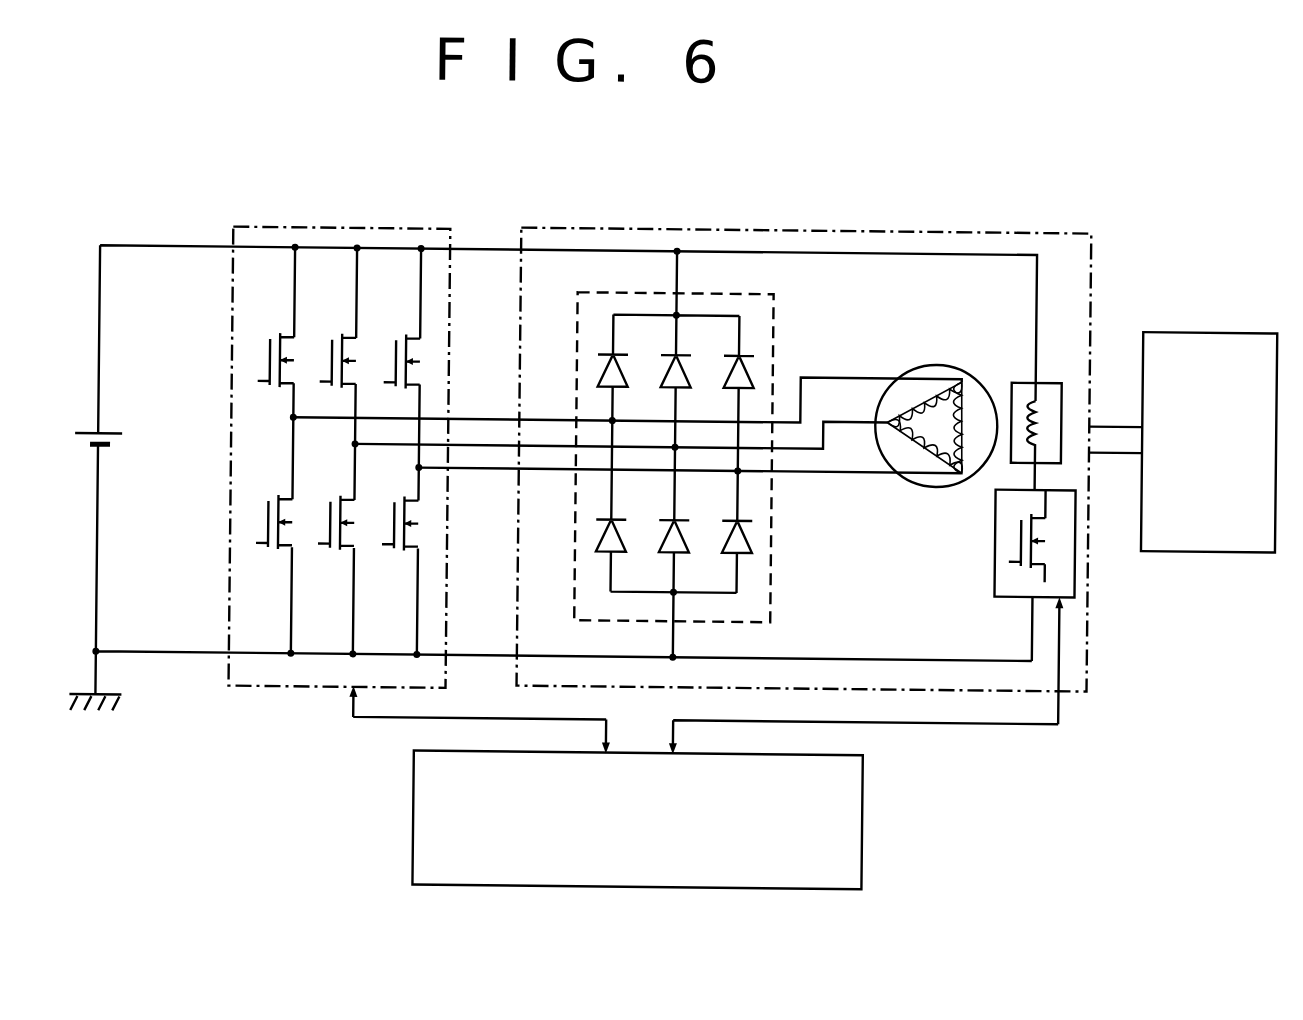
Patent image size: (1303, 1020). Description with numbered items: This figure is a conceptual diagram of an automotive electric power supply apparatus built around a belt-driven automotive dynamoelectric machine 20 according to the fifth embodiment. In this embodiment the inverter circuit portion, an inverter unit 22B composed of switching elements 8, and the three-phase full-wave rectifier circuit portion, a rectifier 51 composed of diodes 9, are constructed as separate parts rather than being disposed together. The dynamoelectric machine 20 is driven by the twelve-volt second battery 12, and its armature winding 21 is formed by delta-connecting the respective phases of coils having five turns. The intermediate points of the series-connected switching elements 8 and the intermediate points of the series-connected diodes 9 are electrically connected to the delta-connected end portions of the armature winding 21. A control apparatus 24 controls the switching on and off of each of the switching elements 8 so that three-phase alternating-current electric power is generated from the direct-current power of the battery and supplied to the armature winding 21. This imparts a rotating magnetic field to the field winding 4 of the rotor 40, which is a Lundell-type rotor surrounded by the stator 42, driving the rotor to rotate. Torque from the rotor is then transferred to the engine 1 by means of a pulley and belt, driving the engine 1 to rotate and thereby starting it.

The engine 1 is at (1210, 327).
The field winding 4 is at (1047, 411).
The switching elements 8 is at (259, 350).
The diodes 9 is at (775, 344).
The second battery 12 is at (114, 437).
The dynamoelectric machine 20 is at (888, 200).
The armature winding 21 is at (971, 392).
The inverter unit 22B is at (337, 421).
The control apparatus 24 is at (875, 783).
The rotor 40 is at (1078, 353).
The stator 42 is at (946, 487).
The rectifier 51 is at (697, 394).